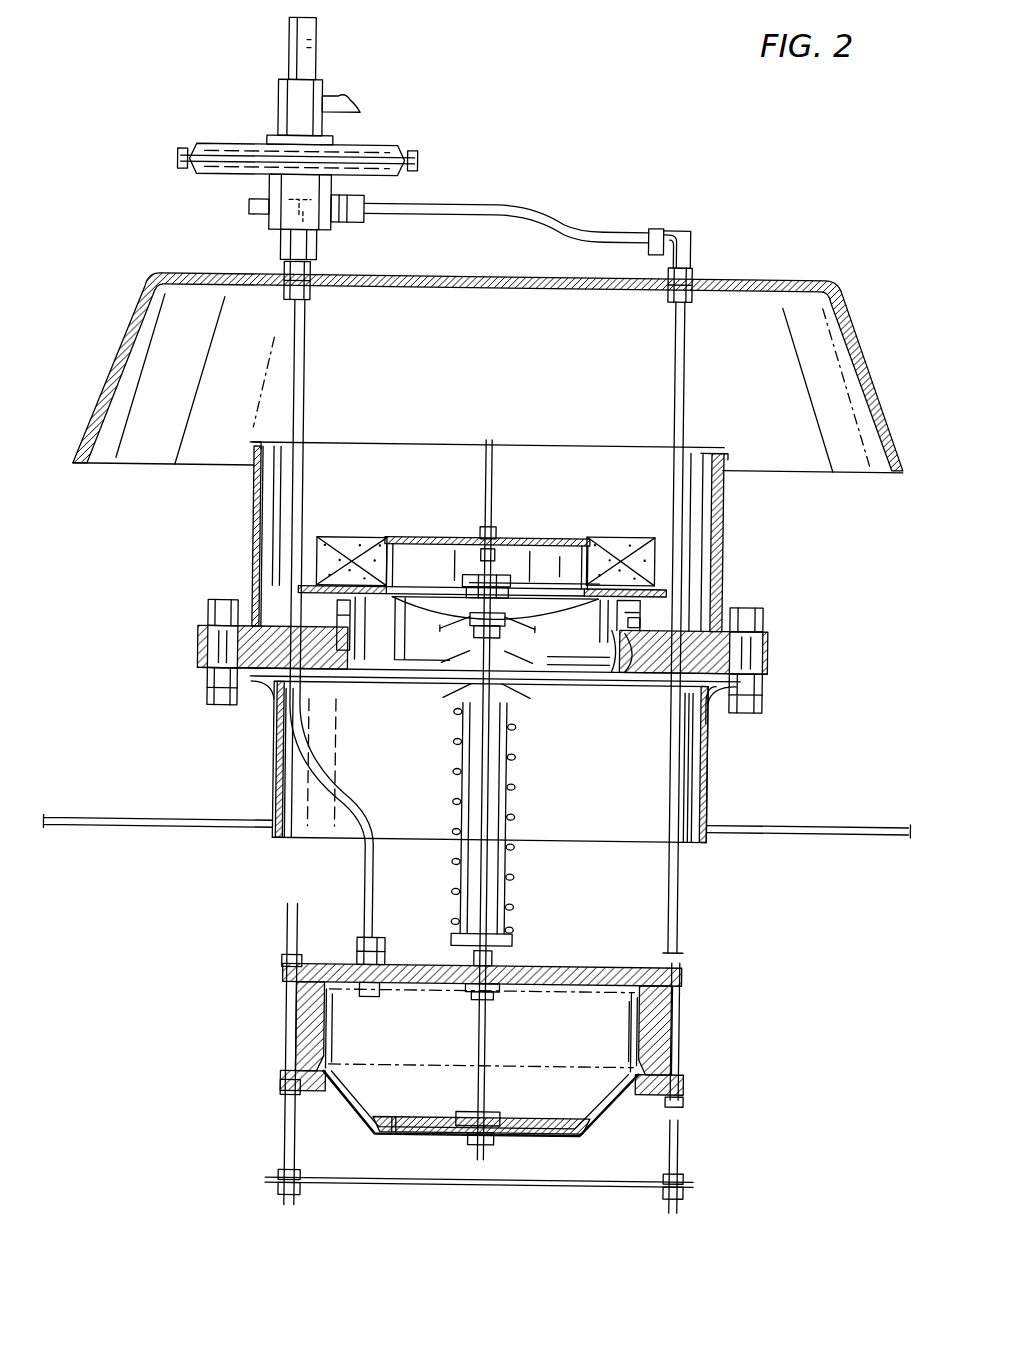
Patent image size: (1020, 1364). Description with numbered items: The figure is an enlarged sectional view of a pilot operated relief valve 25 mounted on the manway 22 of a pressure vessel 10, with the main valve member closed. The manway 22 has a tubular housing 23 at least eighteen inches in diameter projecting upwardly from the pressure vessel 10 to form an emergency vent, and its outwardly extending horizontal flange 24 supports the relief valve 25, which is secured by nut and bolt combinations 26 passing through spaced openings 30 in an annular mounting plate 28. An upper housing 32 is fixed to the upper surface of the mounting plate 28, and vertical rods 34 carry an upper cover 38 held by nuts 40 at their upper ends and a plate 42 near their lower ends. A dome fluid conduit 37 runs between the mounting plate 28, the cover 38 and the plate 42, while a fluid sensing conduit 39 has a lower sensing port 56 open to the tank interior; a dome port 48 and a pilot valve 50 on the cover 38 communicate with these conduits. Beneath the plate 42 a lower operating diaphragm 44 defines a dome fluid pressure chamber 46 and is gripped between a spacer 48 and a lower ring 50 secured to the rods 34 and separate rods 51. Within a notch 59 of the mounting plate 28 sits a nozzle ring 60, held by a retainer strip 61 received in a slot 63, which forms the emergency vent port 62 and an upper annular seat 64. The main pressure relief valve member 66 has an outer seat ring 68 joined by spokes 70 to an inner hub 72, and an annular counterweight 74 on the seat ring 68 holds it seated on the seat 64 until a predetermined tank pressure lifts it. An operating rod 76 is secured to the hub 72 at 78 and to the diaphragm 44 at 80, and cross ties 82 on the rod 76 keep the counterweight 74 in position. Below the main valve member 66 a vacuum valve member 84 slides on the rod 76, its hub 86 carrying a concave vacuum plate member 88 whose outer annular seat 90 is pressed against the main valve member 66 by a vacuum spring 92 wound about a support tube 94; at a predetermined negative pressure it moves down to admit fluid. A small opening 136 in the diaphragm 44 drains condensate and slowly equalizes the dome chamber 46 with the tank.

The pressure vessel 10 is at (858, 825).
The manway 22 is at (719, 782).
The tubular housing 23 is at (706, 748).
The horizontal flange 24 is at (748, 710).
The pilot operated relief valve 25 is at (562, 505).
The nut and bolt combinations 26 is at (207, 640).
The annular mounting plate 28 is at (762, 667).
The spaced openings 30 is at (214, 656).
The upper housing 32 is at (721, 533).
The rods 34 is at (288, 1020).
The dome fluid conduit 37 is at (330, 772).
The upper cover 38 is at (776, 278).
The fluid sensing conduit 39 is at (377, 207).
The nuts 40 is at (305, 294).
The plate 42 is at (570, 966).
The lower operating diaphragm 44 is at (348, 1107).
The dome fluid pressure chamber 46 is at (356, 1027).
The spacer 48 is at (275, 244).
The lower ring 50 is at (376, 126).
The separate rods 51 is at (676, 1042).
The lower sensing port 56 is at (686, 955).
The notch 59 is at (624, 673).
The nozzle ring 60 is at (641, 613).
The retainer strip 61 is at (654, 629).
The emergency vent port 62 is at (603, 656).
The slot 63 is at (569, 661).
The upper annular seat 64 is at (297, 592).
The main pressure relief valve member 66 is at (618, 569).
The outer seat ring 68 is at (351, 657).
The ribs or spokes 70 is at (596, 578).
The inner hub 72 is at (498, 591).
The annular counterweight 74 is at (340, 537).
The operating shaft or rod 76 is at (491, 501).
The connection of rod to hub 78 is at (468, 581).
The connection of rod to diaphragm 80 is at (498, 1138).
The cross ties 82 is at (450, 537).
The vacuum valve member 84 is at (526, 613).
The hub 86 is at (469, 641).
The concave vacuum plate member 88 is at (417, 601).
The outer annular seat 90 is at (379, 641).
The vacuum spring 92 is at (512, 753).
The support tube 94 is at (511, 776).
The opening 136 is at (399, 1135).